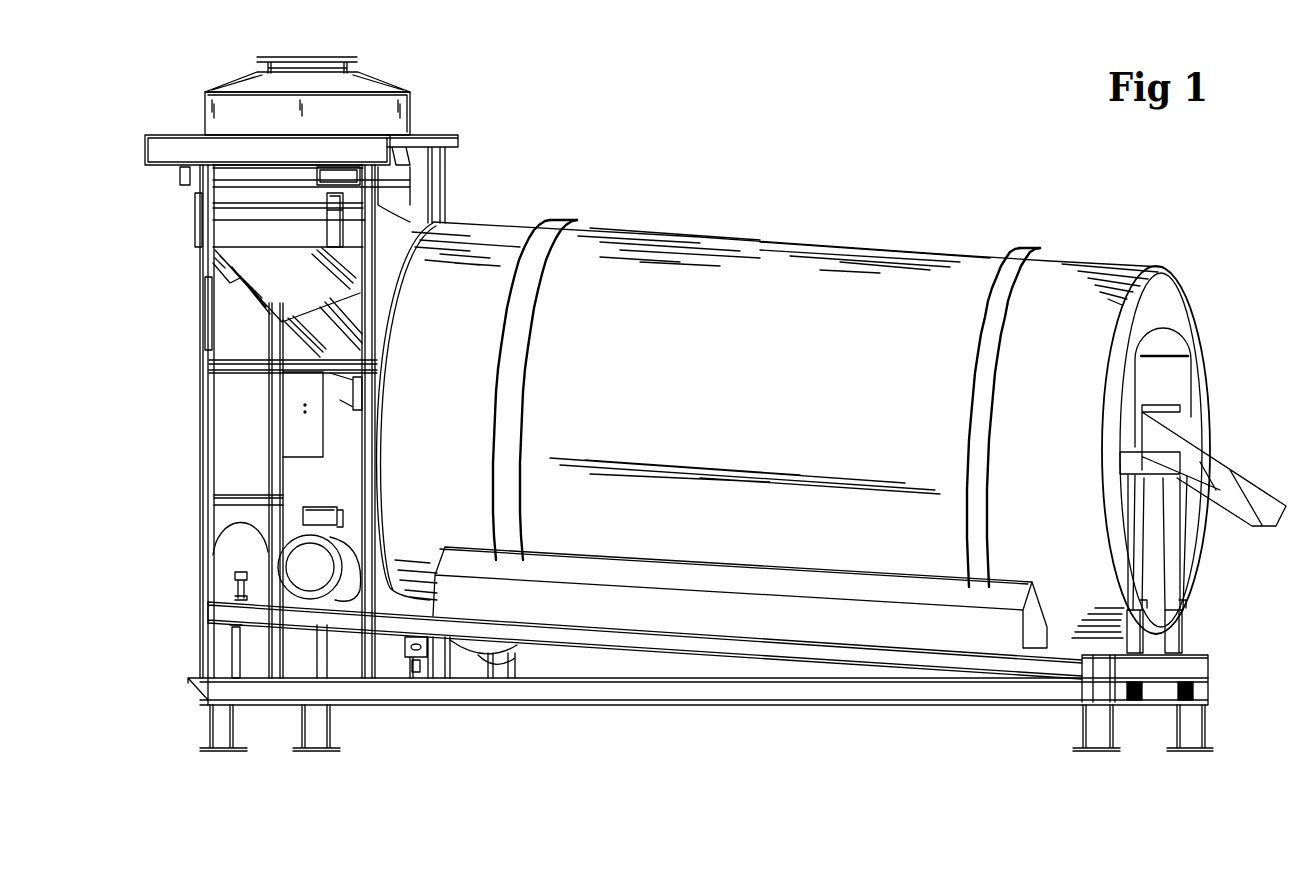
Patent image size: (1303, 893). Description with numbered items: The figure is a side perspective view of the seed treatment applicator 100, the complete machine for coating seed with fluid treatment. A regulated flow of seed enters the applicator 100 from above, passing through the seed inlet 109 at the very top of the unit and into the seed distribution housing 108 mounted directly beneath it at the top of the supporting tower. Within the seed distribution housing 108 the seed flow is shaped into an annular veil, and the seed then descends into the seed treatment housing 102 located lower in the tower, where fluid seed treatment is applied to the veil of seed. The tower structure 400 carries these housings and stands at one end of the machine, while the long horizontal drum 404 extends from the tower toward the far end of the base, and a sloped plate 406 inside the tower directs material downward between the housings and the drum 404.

The seed treatment applicator 100 is at (837, 130).
The seed treatment housing 102 is at (298, 248).
The seed distribution housing 108 is at (208, 93).
The seed inlet 109 is at (348, 66).
The support frame tower 400 is at (200, 450).
The rotating drum 404 is at (738, 404).
The feed chute plate 406 is at (318, 298).